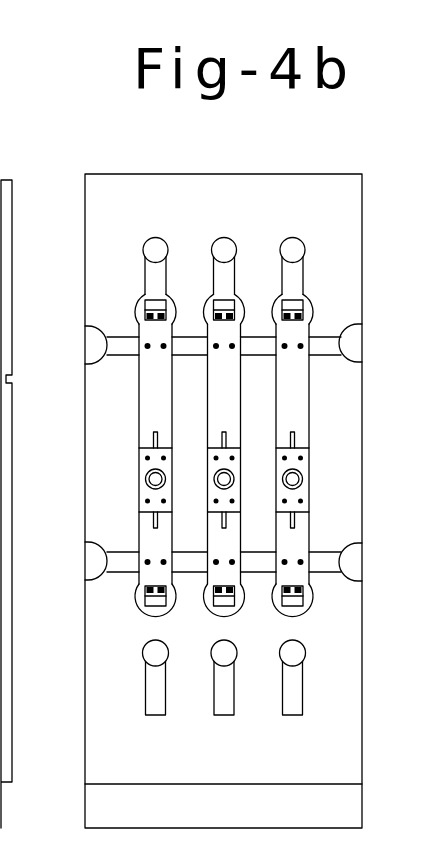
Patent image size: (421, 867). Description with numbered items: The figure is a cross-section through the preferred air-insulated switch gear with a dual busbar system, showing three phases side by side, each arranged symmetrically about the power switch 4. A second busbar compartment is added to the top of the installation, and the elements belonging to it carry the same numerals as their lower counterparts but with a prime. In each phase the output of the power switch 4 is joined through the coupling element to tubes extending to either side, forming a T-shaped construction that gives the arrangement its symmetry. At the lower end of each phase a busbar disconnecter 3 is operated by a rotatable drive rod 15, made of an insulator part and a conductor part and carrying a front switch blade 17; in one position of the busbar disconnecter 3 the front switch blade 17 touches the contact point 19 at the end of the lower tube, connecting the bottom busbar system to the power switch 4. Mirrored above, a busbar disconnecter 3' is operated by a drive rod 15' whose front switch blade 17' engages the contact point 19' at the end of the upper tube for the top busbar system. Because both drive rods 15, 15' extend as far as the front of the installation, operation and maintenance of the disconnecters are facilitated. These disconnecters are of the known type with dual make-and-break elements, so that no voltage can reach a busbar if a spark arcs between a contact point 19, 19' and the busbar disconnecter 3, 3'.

The busbar disconnecter 3 is at (349, 664).
The busbar disconnecter 3' is at (223, 480).
The power switch 4 is at (339, 480).
The drive rod 15 is at (107, 657).
The drive rod 15' is at (140, 226).
The front switch blade 17 is at (105, 688).
The front switch blade 17' is at (105, 260).
The contact point 19 is at (110, 605).
The contact point 19' is at (110, 295).